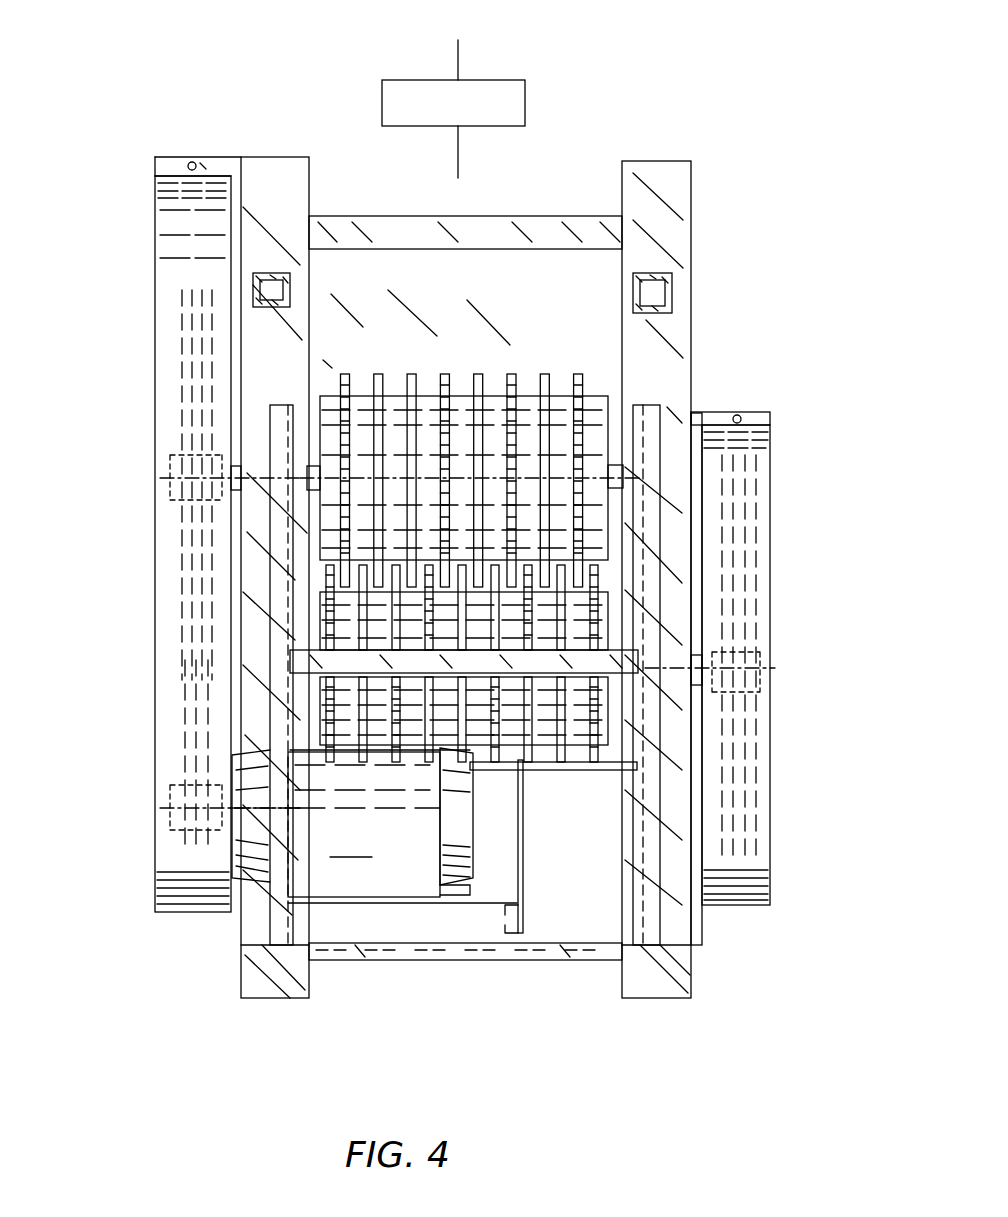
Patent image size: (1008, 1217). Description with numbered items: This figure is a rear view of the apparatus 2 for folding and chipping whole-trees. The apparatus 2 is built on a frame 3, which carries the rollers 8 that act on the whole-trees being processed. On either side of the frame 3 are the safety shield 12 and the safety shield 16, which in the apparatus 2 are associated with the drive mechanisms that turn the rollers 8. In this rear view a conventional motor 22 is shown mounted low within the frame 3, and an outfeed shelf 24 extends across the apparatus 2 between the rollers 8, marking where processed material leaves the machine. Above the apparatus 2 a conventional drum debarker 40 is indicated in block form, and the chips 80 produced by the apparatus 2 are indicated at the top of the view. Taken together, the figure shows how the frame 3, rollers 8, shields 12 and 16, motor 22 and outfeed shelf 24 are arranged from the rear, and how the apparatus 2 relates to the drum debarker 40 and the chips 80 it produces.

The apparatus 2 is at (775, 281).
The frame 3 is at (643, 840).
The rollers 8 is at (590, 403).
The safety shield 12 is at (155, 272).
The safety shield 16 is at (772, 578).
The conventional motor 22 is at (376, 840).
The outfeed shelf 24 is at (325, 653).
The conventional drum debarker 40 is at (453, 129).
The chips 80 is at (454, 46).